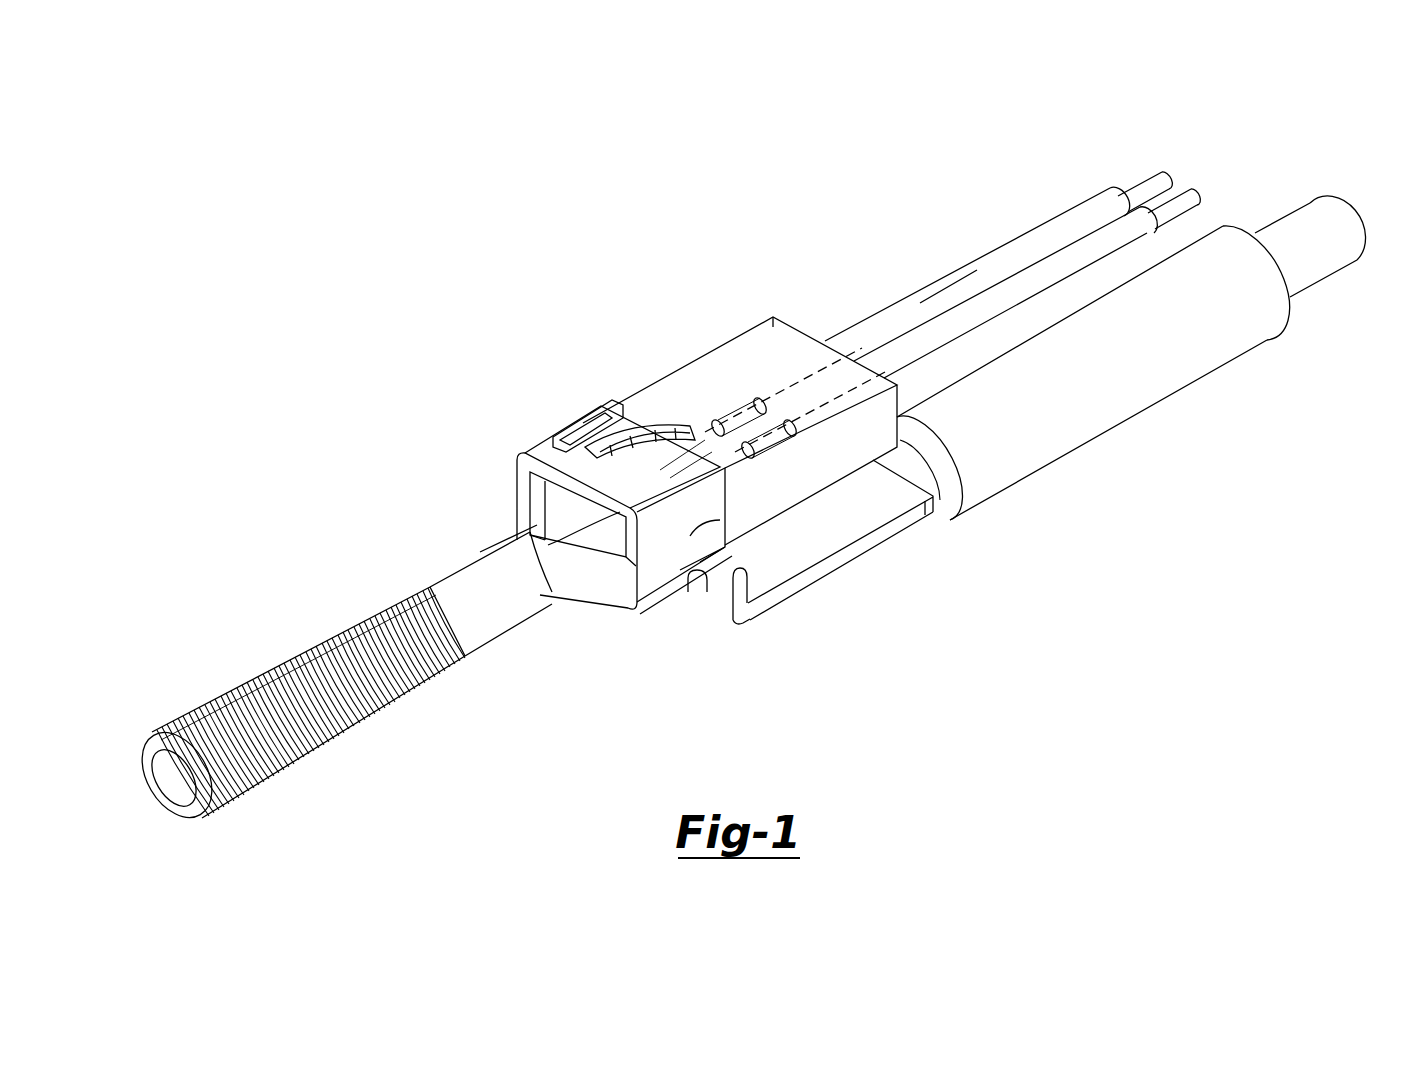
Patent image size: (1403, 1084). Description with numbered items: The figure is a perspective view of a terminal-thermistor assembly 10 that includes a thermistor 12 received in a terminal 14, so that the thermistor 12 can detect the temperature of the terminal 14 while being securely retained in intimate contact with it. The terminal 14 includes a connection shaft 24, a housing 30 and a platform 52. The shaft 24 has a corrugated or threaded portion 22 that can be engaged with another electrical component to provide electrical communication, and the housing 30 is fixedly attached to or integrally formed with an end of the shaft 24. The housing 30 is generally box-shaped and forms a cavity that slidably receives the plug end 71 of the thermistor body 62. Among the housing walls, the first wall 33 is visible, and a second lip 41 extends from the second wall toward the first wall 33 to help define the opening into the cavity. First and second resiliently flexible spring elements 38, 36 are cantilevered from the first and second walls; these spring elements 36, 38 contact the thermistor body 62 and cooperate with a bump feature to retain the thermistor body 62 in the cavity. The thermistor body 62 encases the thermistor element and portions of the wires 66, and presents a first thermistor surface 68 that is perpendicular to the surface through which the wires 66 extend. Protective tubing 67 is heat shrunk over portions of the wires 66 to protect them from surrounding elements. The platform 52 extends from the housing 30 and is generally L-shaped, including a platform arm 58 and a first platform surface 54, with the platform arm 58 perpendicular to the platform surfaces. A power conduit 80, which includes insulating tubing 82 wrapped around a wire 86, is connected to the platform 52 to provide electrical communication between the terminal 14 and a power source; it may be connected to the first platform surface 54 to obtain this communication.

The terminal-thermistor assembly 10 is at (568, 233).
The thermistor 12 is at (497, 602).
The terminal 14 is at (825, 612).
The corrugated or threaded portion 22 is at (285, 666).
The connection shaft 24 is at (360, 716).
The housing 30 is at (480, 414).
The first wall 33 is at (688, 537).
The second spring element 36 is at (538, 478).
The first spring element 38 is at (588, 510).
The second lip 41 is at (581, 441).
The platform 52 is at (868, 592).
The first platform surface 54 is at (866, 508).
The platform arm 58 is at (712, 596).
The thermistor body 62 is at (667, 370).
The wires 66 is at (1190, 188).
The protective tubing 67 is at (1058, 225).
The first thermistor surface 68 is at (776, 340).
The plug end 71 is at (546, 565).
The power conduit 80 is at (1131, 350).
The insulating tubing 82 is at (1148, 387).
The wire 86 is at (1305, 213).